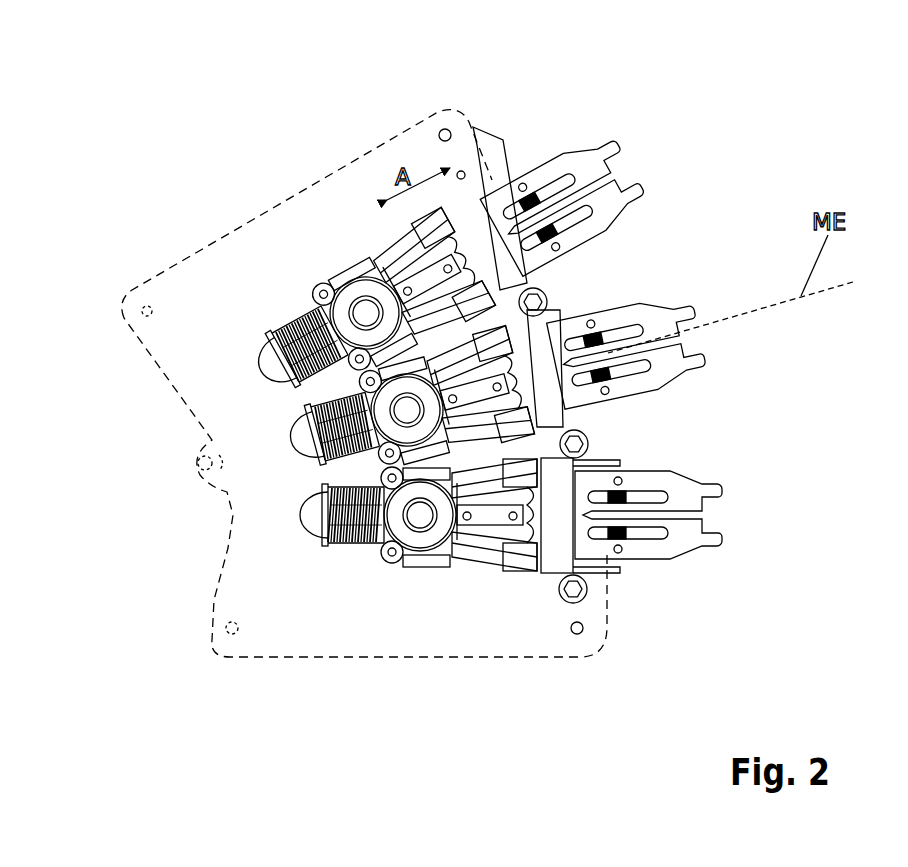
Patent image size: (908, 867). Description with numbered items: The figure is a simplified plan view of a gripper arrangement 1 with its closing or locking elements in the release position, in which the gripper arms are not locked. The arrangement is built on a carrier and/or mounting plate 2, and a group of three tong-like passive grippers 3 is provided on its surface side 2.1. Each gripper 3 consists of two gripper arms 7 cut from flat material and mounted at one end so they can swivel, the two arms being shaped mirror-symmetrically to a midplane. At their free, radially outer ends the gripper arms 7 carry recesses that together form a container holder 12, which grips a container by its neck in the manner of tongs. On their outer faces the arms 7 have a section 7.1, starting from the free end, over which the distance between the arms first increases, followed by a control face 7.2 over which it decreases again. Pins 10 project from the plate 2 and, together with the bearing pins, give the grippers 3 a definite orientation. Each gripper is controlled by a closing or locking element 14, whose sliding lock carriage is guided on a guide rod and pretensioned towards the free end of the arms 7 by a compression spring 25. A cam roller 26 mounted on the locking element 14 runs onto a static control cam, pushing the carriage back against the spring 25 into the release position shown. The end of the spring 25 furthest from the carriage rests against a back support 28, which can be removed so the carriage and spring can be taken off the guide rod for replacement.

The gripper arrangement 1 is at (496, 392).
The carrier and/or mounting plate 2 is at (212, 600).
The surface side 2.1 is at (293, 621).
The passive gripper 3 is at (490, 392).
The gripper arm 7 is at (598, 147).
The section 7.1 is at (572, 150).
The control face 7.2 is at (487, 180).
The pin 10 is at (588, 444).
The container holder 12 is at (616, 158).
The closing or locking element 14 is at (348, 240).
The compression spring 25 is at (292, 320).
The cam roller 26 is at (425, 543).
The back support 28 is at (313, 427).